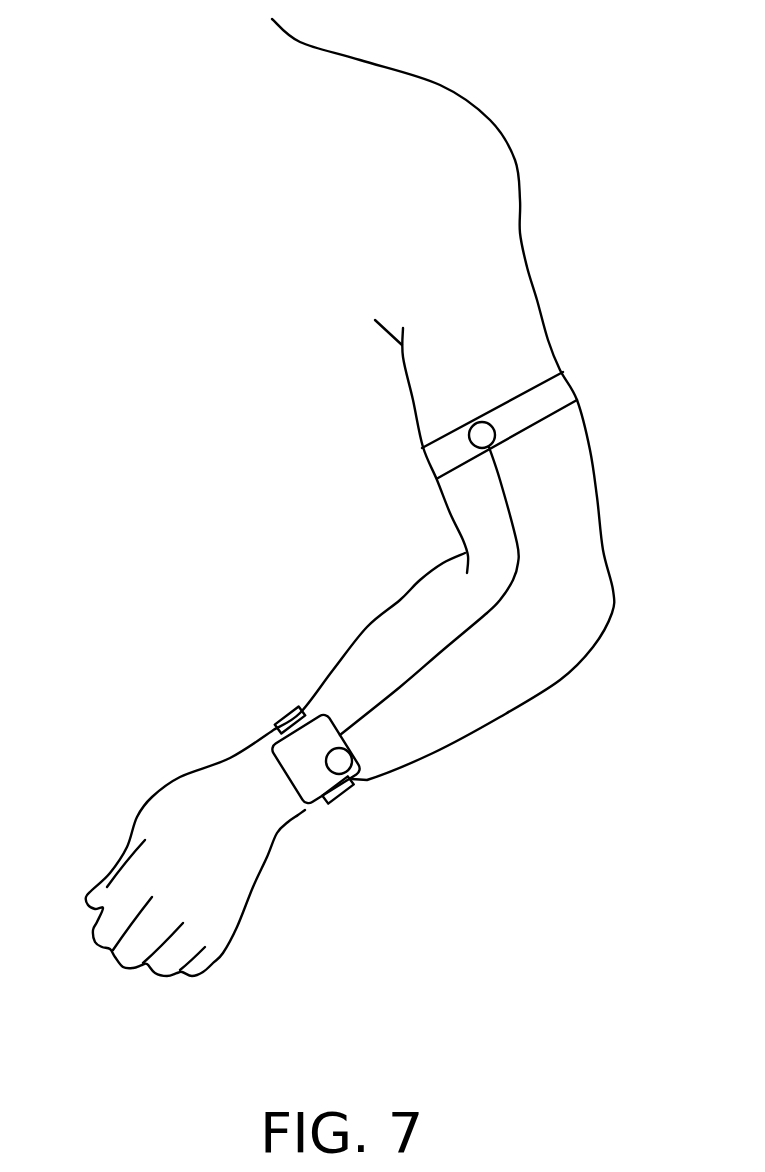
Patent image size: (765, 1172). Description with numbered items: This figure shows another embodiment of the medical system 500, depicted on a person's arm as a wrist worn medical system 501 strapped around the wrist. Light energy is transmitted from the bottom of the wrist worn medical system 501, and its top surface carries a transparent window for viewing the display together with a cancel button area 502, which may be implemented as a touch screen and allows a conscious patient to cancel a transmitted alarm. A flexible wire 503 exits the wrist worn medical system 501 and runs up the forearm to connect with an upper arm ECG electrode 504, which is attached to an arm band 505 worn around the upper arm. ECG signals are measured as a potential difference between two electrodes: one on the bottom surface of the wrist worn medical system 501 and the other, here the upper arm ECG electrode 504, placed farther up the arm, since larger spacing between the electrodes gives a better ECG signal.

The medical system 500 is at (347, 497).
The wrist worn medical system 501 is at (309, 787).
The cancel button area 502 is at (340, 762).
The flexible wire 503 is at (443, 650).
The upper arm ECG electrode 504 is at (478, 437).
The arm band 505 is at (560, 390).